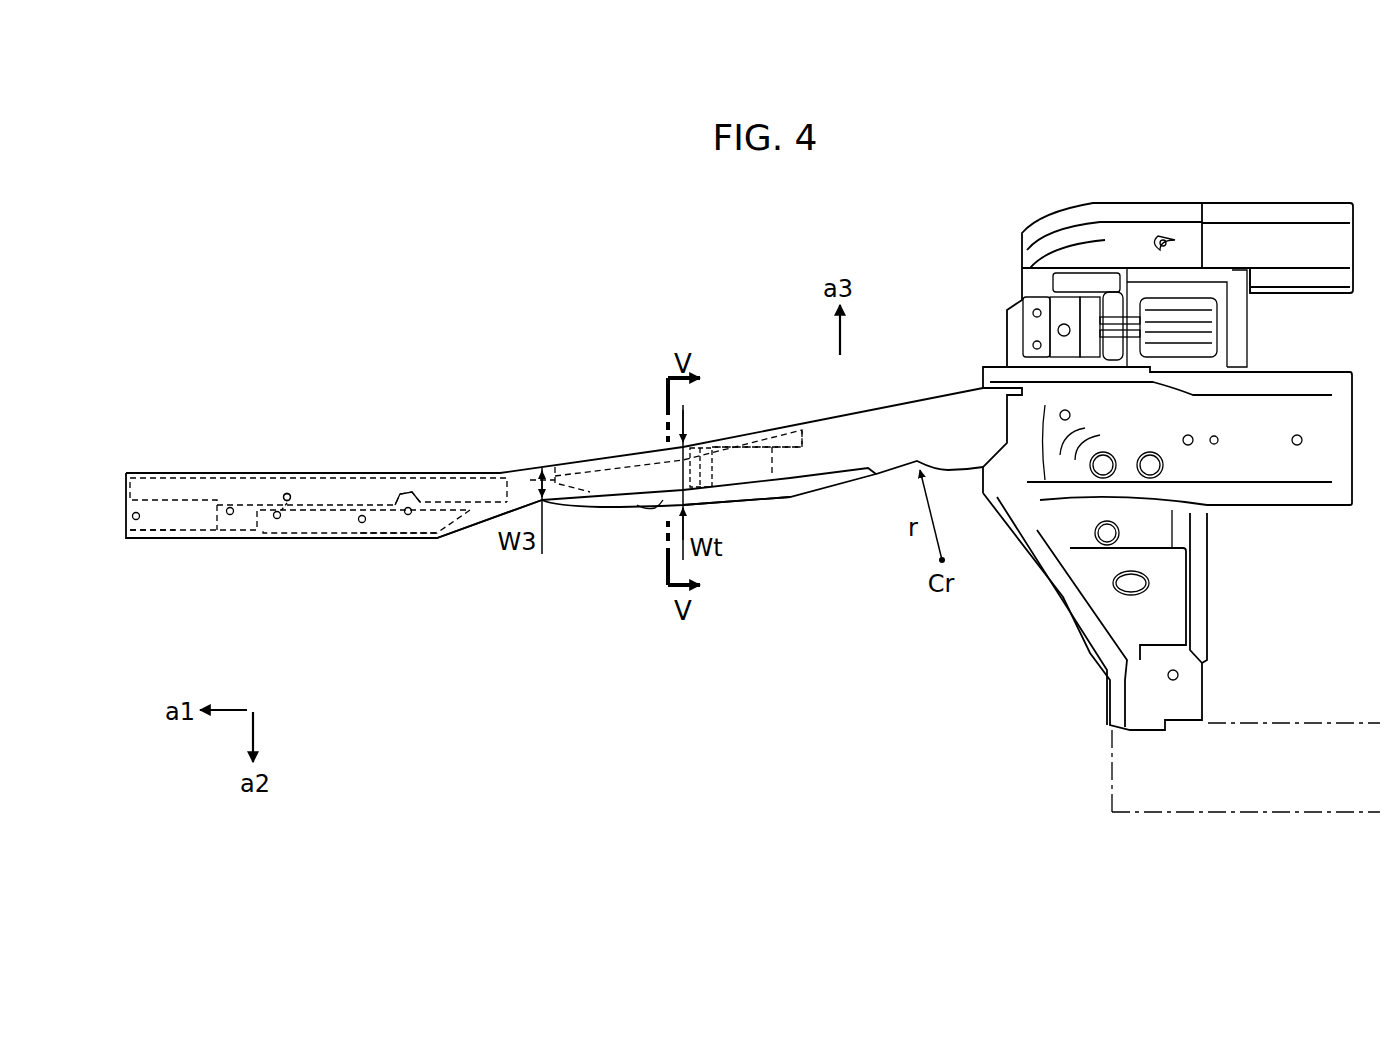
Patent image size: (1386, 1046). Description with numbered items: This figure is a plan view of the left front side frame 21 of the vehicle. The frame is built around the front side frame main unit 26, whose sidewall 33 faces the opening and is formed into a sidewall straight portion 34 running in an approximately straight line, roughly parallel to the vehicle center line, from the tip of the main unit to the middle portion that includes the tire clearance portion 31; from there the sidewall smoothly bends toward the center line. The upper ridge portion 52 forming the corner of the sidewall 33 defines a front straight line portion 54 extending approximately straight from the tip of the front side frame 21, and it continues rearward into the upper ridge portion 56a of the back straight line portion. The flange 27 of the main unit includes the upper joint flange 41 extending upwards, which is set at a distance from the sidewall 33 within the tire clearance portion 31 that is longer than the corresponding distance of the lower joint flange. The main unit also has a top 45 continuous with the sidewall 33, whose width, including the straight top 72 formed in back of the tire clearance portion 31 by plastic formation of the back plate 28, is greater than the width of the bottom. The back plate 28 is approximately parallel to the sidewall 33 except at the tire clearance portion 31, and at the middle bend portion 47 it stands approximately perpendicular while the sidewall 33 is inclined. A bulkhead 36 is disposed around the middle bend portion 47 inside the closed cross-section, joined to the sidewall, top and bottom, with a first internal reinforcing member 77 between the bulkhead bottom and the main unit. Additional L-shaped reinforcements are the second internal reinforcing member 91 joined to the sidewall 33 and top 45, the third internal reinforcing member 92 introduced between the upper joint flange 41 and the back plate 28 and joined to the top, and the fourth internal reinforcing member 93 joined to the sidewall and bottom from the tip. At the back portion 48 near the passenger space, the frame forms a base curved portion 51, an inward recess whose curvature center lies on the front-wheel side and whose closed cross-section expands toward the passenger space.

The front side frame 21 is at (222, 315).
The front straight line portion 54 is at (127, 473).
The sidewall straight portion 34 is at (533, 470).
The front side frame main unit 26 is at (370, 473).
The sidewall 33 is at (370, 473).
The flange 27 is at (210, 533).
The upper joint flange 41 is at (210, 533).
The top 45 is at (257, 490).
The second internal reinforcing member 91 is at (313, 470).
The upper ridge portion 52 is at (425, 473).
The back plate 28 is at (337, 540).
The fourth internal reinforcing member 93 is at (185, 541).
The third internal reinforcing member 92 is at (385, 541).
The tire clearance portion 31 is at (628, 512).
The straight top 72 is at (665, 500).
The bulkhead 36 is at (714, 470).
The middle bend portion 47 is at (720, 498).
The first internal reinforcing member 77 is at (782, 457).
The back portion 48 is at (971, 410).
The base curved portion 51 is at (949, 472).
The upper ridge portion 56a is at (1228, 505).